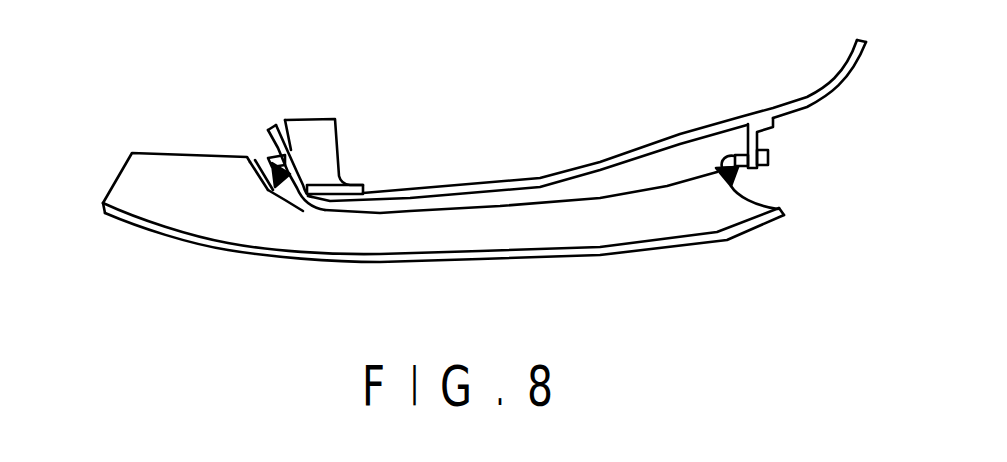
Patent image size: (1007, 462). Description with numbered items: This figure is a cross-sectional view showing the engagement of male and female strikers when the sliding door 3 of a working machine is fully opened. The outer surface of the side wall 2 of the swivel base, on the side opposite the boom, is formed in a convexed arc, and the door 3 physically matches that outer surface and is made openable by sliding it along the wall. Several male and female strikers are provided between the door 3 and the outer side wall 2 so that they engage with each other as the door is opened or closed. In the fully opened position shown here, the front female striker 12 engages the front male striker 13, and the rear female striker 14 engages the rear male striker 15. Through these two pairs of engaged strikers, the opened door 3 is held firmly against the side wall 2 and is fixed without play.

The side wall 2 is at (817, 98).
The door 3 is at (494, 261).
The front female striker 12 is at (268, 158).
The front male striker 13 is at (267, 187).
The rear female striker 14 is at (727, 181).
The rear male striker 15 is at (742, 171).